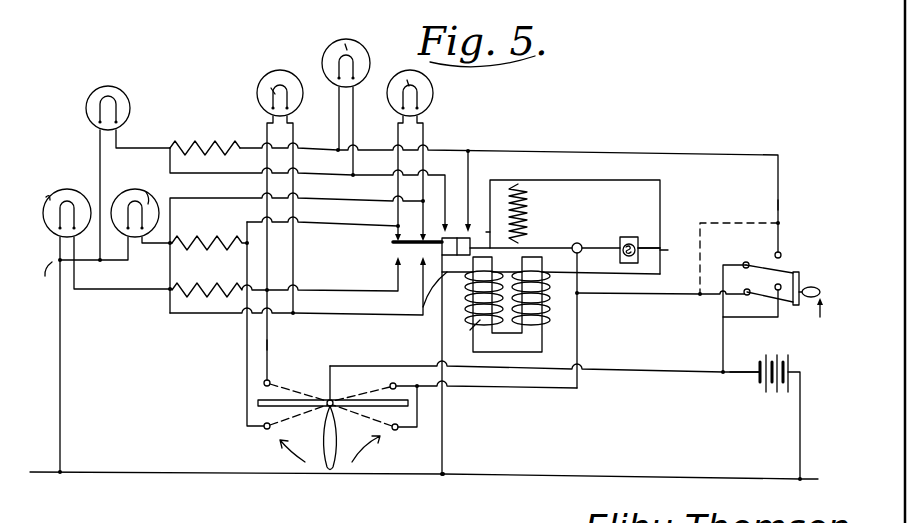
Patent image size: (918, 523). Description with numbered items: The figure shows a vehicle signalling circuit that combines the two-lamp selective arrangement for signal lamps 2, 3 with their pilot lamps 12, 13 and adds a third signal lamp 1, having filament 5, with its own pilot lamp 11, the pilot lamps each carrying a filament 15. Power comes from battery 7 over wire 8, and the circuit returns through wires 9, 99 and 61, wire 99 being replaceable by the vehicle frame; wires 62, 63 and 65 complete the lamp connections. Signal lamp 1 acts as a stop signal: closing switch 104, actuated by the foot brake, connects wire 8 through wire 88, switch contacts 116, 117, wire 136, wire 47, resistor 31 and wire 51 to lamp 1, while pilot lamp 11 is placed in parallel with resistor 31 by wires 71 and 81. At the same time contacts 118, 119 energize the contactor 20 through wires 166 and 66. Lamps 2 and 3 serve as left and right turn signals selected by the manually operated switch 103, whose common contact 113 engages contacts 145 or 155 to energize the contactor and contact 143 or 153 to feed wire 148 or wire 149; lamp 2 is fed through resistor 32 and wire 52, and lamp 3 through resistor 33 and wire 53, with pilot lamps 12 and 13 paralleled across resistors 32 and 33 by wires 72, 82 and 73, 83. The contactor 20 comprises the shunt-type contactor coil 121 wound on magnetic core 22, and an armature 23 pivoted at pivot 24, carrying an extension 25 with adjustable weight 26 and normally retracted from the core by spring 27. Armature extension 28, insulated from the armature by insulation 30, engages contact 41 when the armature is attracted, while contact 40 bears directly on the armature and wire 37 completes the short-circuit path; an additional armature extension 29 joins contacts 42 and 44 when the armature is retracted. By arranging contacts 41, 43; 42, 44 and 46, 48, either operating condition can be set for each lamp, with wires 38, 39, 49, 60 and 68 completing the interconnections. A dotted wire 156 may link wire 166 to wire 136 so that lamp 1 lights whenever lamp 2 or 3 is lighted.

The signal lamp 1 is at (110, 86).
The signal lamp 2 is at (64, 189).
The signal lamp 3 is at (136, 189).
The filament 5 is at (90, 95).
The battery 7 is at (781, 362).
The wire 8 is at (743, 374).
The wire 9 is at (798, 430).
The pilot lamp 11 is at (338, 42).
The pilot lamp 12 is at (268, 74).
The pilot lamp 13 is at (433, 97).
The lamp filament 15 is at (273, 92).
The contactor 20 is at (532, 333).
The magnetic core 22 is at (495, 345).
The armature 23 is at (575, 227).
The pivot 24 is at (583, 245).
The armature extension 25 is at (646, 246).
The adjustable weight 26 is at (630, 237).
The spring 27 is at (530, 198).
The armature extension 28 is at (393, 245).
The additional armature extension 29 is at (458, 262).
The insulation 30 is at (478, 251).
The resistor 31 is at (197, 140).
The resistor 32 is at (207, 283).
The resistor 33 is at (205, 240).
The wire 37 is at (170, 174).
The conductor 38 is at (170, 313).
The conductor 39 is at (192, 198).
The contact 40 is at (527, 218).
The contact 41 is at (473, 313).
The contact 42 is at (456, 229).
The contact 43 is at (393, 248).
The contact 44 is at (488, 226).
The contact 46 is at (393, 243).
The wire 47 is at (468, 149).
The contact 48 is at (393, 241).
The conductor 49 is at (247, 238).
The wire 51 is at (150, 146).
The wire 52 is at (115, 289).
The wire 53 is at (150, 250).
The relay casing 60 is at (676, 256).
The wire 61 is at (100, 165).
The conductor 62 is at (45, 276).
The conductor 63 is at (102, 262).
The conductor 65 is at (62, 372).
The wire 66 is at (580, 291).
The conductor 68 is at (442, 337).
The wire 71 is at (355, 102).
The wire 72 is at (296, 124).
The wire 73 is at (426, 124).
The wire 81 is at (338, 104).
The wire 82 is at (262, 123).
The wire 83 is at (397, 124).
The wire 88 is at (724, 352).
The wire 99 is at (200, 474).
The switch 103 is at (338, 470).
The switch 104 is at (770, 282).
The contact 113 is at (328, 398).
The switch contact 116 is at (744, 262).
The switch contact 117 is at (782, 252).
The switch contact 118 is at (746, 296).
The switch contact 119 is at (780, 290).
The contactor coil 121 is at (474, 336).
The wire 136 is at (780, 207).
The contact 143 is at (264, 382).
The contact 145 is at (396, 431).
The wire 148 is at (267, 347).
The wire 149 is at (256, 403).
The contact 153 is at (262, 428).
The contact 155 is at (410, 404).
The wire 156 is at (730, 222).
The wire 166 is at (644, 296).